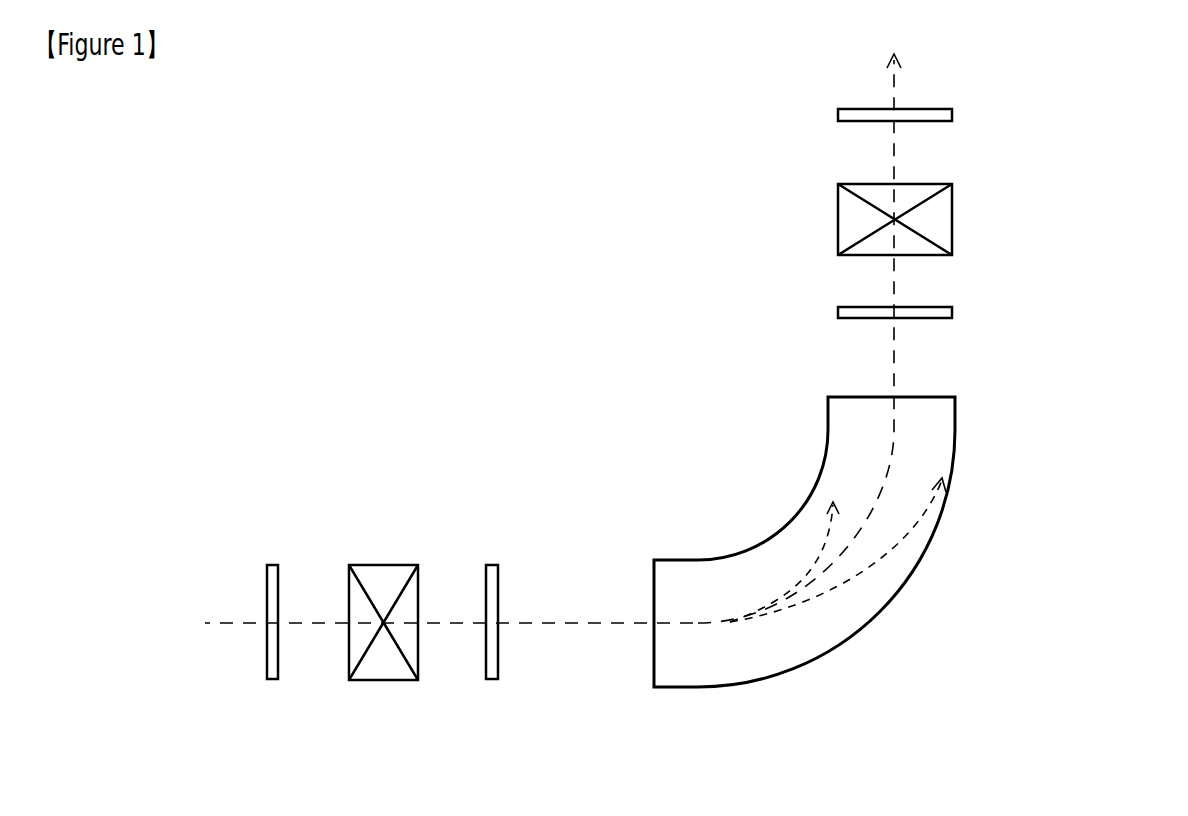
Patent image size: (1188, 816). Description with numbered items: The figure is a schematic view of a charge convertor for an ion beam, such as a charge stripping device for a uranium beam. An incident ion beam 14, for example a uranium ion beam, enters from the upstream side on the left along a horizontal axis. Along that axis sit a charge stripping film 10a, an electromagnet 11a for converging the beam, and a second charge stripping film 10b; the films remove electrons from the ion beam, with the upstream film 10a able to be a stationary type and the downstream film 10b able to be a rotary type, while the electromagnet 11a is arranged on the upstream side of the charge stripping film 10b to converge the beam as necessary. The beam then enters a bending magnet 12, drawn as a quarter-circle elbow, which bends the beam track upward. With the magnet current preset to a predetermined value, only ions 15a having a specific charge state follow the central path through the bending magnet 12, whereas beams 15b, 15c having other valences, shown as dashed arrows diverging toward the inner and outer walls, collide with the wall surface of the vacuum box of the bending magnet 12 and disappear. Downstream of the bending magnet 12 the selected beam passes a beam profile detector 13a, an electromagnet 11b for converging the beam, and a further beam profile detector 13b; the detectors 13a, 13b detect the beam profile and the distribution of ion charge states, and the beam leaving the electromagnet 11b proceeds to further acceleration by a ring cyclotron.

The charge stripping film 10a is at (276, 568).
The electromagnet for converging beam 11a is at (383, 572).
The charge stripping film 10b is at (493, 572).
The incident ion beam 14 is at (215, 622).
The bending magnet 12 is at (838, 633).
The ions having a specific charge state 15a is at (894, 440).
The beam having other valence 15b is at (812, 565).
The beam having other valence 15c is at (898, 543).
The beam profile detector 13a is at (930, 310).
The electromagnet for converging beam 11b is at (943, 218).
The beam profile detector 13b is at (930, 112).